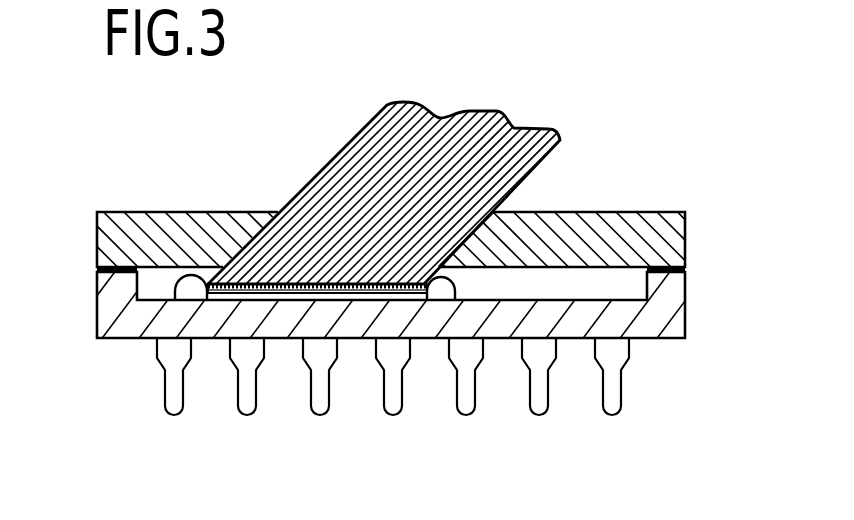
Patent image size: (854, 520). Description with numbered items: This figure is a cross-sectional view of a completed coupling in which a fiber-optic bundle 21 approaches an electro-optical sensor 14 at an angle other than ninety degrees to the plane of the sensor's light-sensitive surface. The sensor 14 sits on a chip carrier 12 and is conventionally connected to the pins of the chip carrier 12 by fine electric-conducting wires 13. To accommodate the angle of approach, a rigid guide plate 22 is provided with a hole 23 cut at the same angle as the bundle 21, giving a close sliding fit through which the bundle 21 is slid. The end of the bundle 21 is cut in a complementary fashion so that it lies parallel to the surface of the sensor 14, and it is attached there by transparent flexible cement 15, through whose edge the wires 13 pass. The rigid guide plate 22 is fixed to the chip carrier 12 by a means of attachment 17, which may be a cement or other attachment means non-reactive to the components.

The chip carrier 12 is at (673, 315).
The fine electric-conducting wires 13 is at (453, 288).
The electro-optical sensor 14 is at (388, 295).
The transparent flexible cement 15 is at (283, 293).
The means of attachment 17 is at (685, 268).
The fiber-optic bundle 21 is at (545, 131).
The rigid guide plate 22 is at (665, 235).
The hole 23 is at (497, 211).